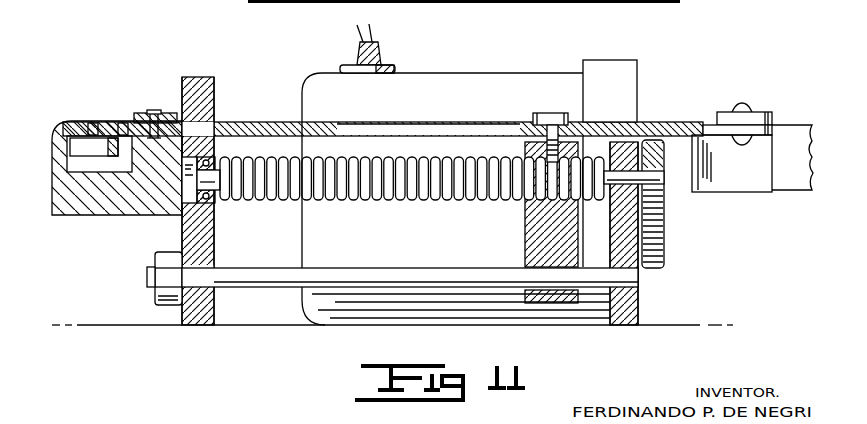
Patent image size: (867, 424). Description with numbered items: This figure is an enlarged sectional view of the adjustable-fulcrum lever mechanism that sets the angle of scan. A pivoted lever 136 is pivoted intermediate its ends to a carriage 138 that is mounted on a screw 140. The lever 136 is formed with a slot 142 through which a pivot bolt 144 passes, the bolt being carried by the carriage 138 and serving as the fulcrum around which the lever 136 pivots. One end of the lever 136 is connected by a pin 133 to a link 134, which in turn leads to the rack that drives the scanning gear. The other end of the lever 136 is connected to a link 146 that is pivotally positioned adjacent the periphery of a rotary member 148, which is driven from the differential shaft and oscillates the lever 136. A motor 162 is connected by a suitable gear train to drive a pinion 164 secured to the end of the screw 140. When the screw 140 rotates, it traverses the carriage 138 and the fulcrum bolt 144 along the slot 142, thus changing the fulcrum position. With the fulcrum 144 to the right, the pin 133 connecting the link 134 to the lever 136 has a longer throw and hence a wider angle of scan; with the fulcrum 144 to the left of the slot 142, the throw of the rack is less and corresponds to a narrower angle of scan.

The pin 133 is at (152, 110).
The link 134 is at (133, 120).
The pivoted lever 136 is at (250, 123).
The carriage 138 is at (525, 230).
The screw 140 is at (403, 200).
The slot 142 is at (427, 128).
The pivot bolt 144 is at (550, 113).
The link 146 is at (715, 112).
The rotary member 148 is at (788, 125).
The motor 162 is at (433, 77).
The pinion 164 is at (663, 202).